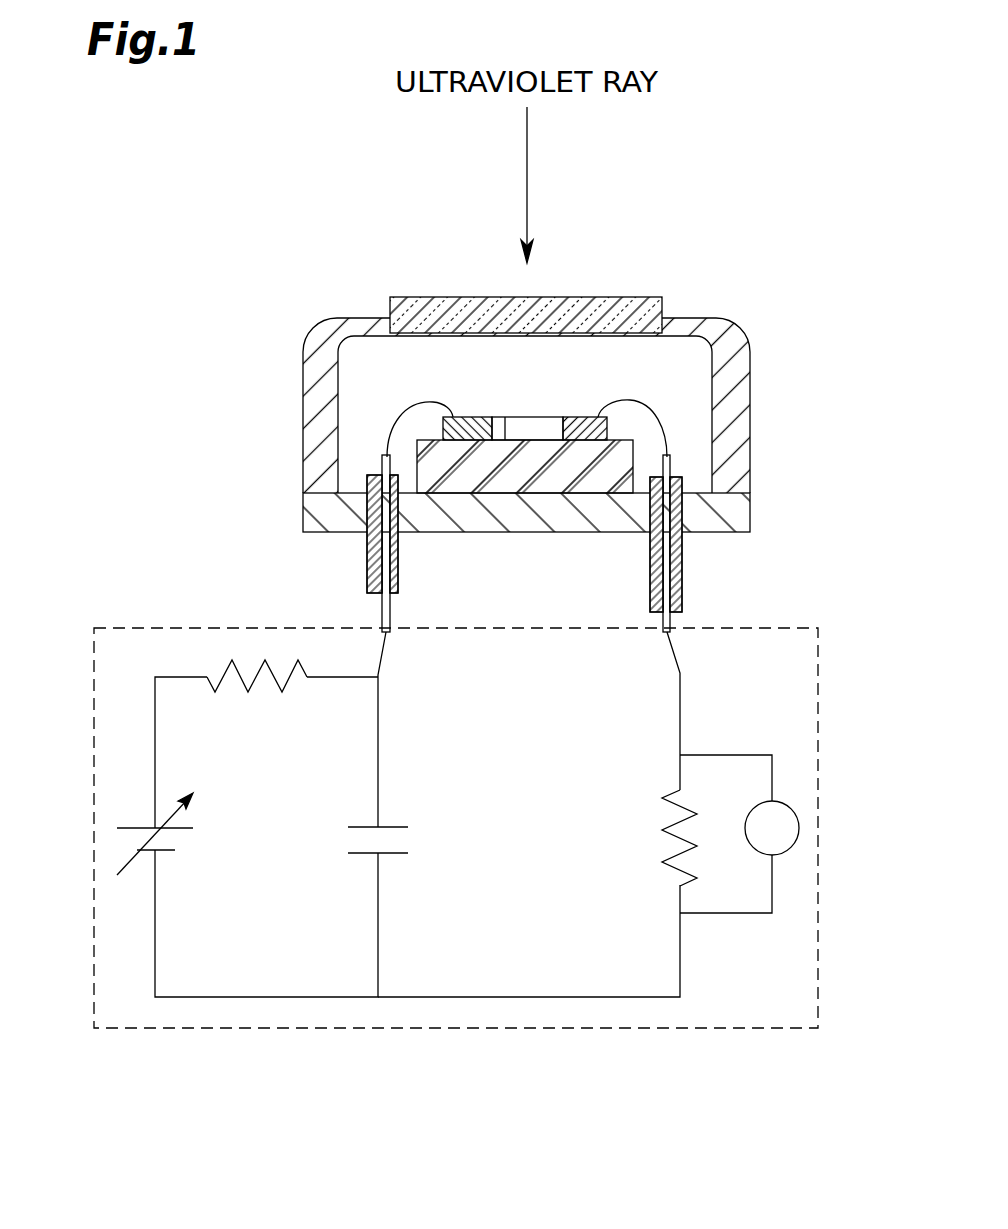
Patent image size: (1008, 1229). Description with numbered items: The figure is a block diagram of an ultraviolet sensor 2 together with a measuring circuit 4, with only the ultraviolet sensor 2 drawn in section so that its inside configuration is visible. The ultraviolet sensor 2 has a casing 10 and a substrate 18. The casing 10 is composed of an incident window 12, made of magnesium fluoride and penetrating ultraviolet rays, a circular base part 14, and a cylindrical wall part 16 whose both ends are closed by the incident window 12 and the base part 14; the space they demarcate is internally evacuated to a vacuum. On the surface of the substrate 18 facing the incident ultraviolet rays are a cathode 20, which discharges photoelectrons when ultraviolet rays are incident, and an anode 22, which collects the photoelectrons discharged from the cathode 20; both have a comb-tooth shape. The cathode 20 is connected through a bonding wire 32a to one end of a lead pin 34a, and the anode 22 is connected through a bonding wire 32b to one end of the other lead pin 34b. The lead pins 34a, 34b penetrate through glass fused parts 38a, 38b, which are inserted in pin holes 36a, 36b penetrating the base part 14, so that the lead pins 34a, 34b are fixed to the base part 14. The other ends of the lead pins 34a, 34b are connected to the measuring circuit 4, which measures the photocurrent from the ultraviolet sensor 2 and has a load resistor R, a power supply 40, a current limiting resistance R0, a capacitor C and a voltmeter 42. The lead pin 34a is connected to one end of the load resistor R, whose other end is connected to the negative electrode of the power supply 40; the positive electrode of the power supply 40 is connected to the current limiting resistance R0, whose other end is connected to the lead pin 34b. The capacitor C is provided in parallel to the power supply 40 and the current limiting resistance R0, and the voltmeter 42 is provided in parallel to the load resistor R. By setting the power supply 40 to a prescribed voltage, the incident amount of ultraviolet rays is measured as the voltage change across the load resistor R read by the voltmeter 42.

The ultraviolet sensor 2 is at (502, 461).
The measuring circuit 4 is at (492, 828).
The casing 10 is at (468, 413).
The incident window 12 is at (390, 311).
The base part 14 is at (491, 514).
The wall part 16 is at (310, 418).
The substrate 18 is at (570, 492).
The cathode 20 is at (544, 420).
The anode 22 is at (497, 415).
The bonding wire 32a is at (634, 402).
The bonding wire 32b is at (430, 400).
The lead pin 34a is at (668, 455).
The lead pin 34b is at (385, 455).
The pin hole 36a is at (675, 535).
The pin hole 36b is at (367, 537).
The glass fused part 38a is at (683, 597).
The glass fused part 38b is at (367, 583).
The power supply 40 is at (177, 842).
The voltmeter 42 is at (803, 829).
The current limiting resistance R0 is at (269, 687).
The capacitor C is at (411, 848).
The load resistor R is at (659, 837).